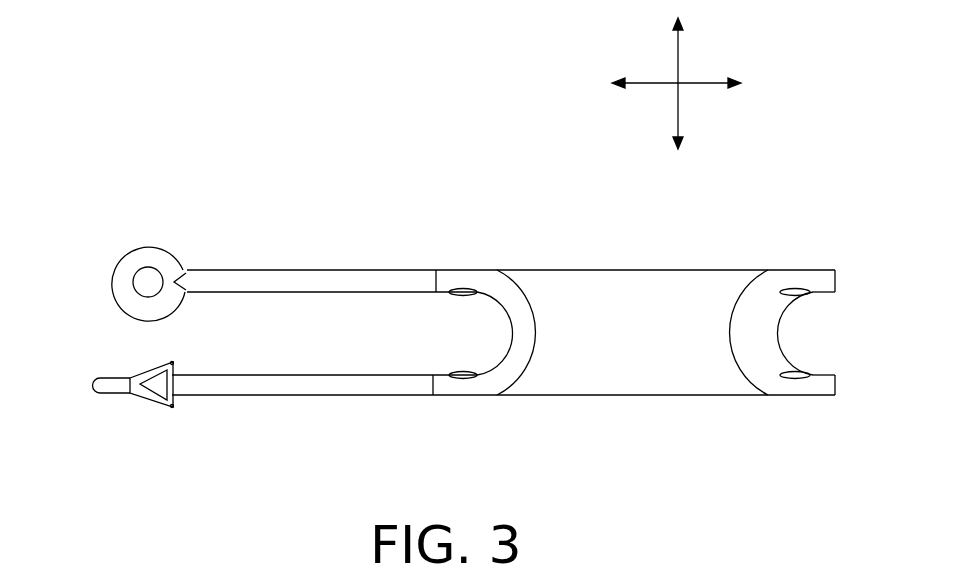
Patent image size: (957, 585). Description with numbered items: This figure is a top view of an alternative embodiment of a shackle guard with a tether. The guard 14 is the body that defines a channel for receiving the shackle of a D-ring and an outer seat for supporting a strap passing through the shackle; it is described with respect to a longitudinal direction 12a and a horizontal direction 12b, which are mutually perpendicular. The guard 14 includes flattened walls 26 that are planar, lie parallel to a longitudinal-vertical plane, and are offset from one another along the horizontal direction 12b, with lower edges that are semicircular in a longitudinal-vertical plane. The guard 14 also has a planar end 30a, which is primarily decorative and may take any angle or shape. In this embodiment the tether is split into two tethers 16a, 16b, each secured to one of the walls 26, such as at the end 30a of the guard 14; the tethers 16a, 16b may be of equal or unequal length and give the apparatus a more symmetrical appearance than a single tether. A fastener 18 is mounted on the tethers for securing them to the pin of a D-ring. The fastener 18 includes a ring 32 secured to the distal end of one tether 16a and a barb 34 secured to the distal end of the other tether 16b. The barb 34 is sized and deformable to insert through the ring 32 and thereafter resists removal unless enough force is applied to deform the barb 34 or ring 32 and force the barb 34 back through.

The longitudinal direction 12a is at (716, 83).
The horizontal direction 12b is at (678, 58).
The guard 14 is at (662, 262).
The tether 16a is at (300, 276).
The tether 16b is at (283, 386).
The fastener 18 is at (98, 315).
The flattened walls 26 is at (512, 270).
The end 30a is at (488, 278).
The ring 32 is at (150, 250).
The barb 34 is at (145, 396).